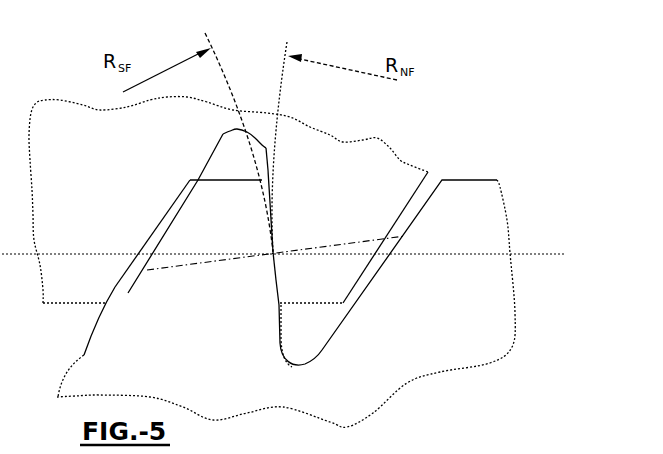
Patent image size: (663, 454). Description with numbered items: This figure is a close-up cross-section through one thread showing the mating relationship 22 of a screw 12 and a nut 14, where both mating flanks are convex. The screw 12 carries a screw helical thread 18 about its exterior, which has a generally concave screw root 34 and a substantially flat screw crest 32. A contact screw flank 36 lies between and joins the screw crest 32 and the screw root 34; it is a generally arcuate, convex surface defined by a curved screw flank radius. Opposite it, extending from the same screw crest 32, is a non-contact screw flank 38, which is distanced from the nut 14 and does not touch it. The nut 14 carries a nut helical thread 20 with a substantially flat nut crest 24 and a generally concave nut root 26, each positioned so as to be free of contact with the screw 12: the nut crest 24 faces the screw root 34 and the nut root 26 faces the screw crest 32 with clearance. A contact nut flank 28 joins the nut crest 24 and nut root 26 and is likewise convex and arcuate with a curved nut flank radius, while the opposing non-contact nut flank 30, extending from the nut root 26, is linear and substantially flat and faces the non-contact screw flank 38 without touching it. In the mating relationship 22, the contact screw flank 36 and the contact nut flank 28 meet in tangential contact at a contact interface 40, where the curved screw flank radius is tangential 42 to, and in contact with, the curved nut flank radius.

The screw 12 is at (90, 357).
The nut 14 is at (416, 172).
The screw helical thread 18 is at (85, 388).
The nut helical thread 20 is at (393, 163).
The mating relationship 22 is at (506, 132).
The nut crest 24 is at (313, 305).
The nut root 26 is at (226, 134).
The contact nut flank 28 is at (271, 197).
The non-contact nut flank 30 is at (162, 222).
The screw crest 32 is at (230, 181).
The screw root 34 is at (296, 367).
The contact screw flank 36 is at (278, 316).
The non-contact screw flank 38 is at (127, 292).
The contact interface 40 is at (282, 246).
The tangential 42 is at (266, 145).